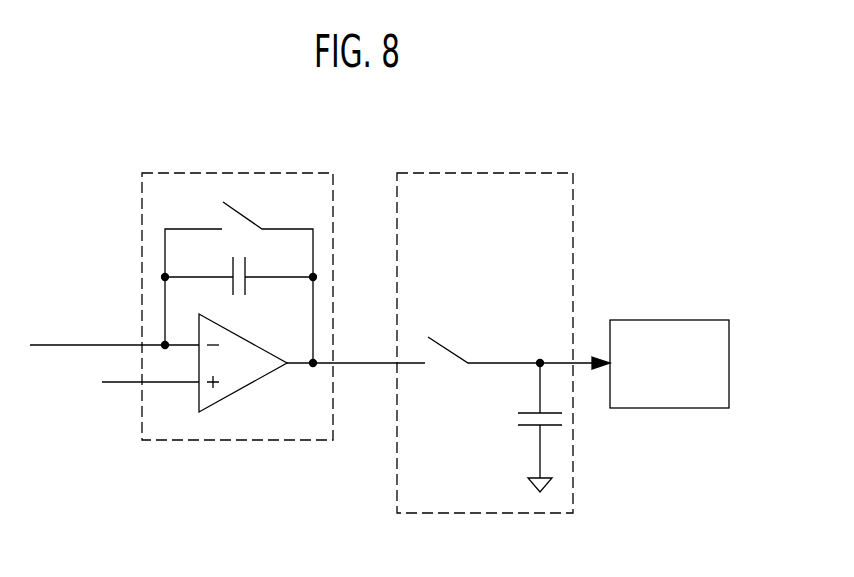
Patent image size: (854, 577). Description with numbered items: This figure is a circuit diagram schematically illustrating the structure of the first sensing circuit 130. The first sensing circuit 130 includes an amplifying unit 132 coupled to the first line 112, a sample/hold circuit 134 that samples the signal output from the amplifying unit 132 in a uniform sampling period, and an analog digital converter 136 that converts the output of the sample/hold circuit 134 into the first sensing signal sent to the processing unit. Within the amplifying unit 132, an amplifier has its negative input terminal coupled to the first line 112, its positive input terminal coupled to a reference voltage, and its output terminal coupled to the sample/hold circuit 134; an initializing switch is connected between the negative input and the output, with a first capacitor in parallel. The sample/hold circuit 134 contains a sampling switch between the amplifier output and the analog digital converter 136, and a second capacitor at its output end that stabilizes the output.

The first line 112 is at (67, 342).
The first sensing circuit 130 is at (653, 152).
The amplifying unit 132 is at (265, 173).
The sample/hold circuit 134 is at (505, 173).
The analog digital converter 136 is at (695, 319).